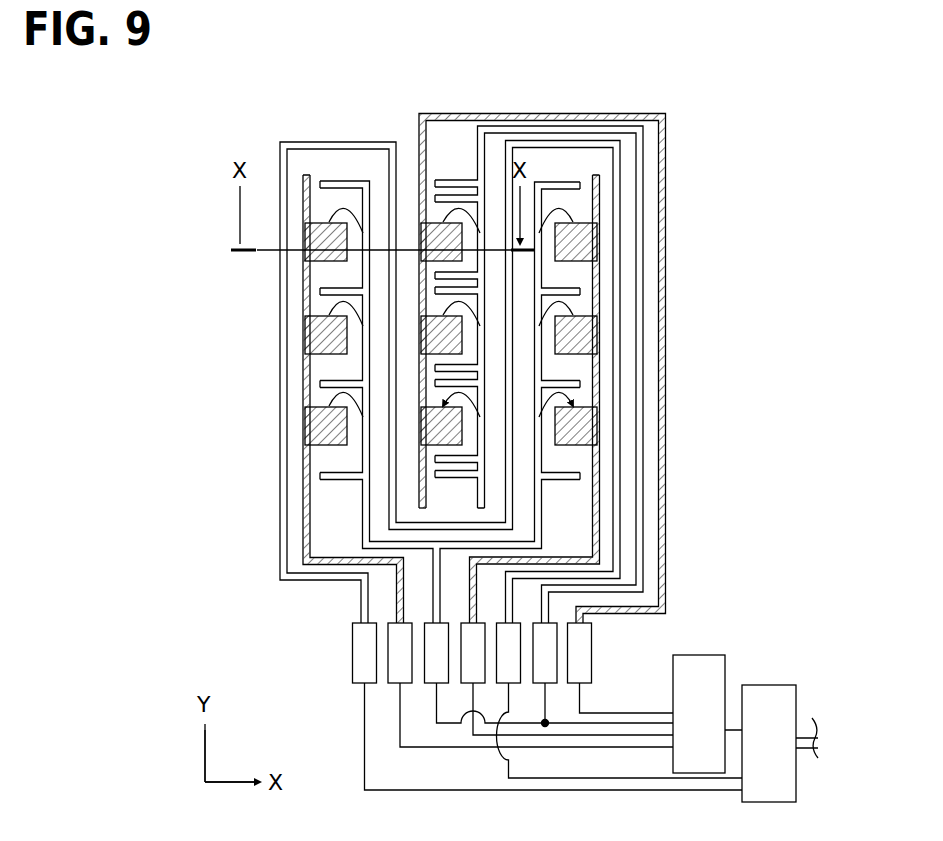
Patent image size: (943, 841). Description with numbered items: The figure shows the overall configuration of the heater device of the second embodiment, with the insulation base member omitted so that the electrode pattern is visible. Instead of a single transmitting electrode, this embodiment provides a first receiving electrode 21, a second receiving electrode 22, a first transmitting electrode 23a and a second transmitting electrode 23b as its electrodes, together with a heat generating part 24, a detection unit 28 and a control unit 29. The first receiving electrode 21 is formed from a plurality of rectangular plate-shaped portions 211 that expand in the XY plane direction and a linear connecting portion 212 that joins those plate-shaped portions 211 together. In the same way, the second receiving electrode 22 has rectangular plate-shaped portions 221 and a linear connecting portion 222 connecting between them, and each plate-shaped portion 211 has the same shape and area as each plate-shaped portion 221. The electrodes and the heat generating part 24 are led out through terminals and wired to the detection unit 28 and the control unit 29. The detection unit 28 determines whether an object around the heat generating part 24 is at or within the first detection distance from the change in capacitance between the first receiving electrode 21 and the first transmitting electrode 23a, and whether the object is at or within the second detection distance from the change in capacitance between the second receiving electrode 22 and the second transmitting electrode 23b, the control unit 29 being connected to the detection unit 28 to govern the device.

The first receiving electrode 21 is at (399, 340).
The plate-shaped portion 211 is at (434, 222).
The connecting portion 212 is at (418, 287).
The second receiving electrode 22 is at (465, 399).
The plate-shaped portion 221 is at (329, 318).
The connecting portion 222 is at (310, 366).
The first transmitting electrode 23a is at (483, 453).
The second transmitting electrode 23b is at (363, 493).
The heat generating part 24 is at (280, 384).
The detection unit 28 is at (703, 655).
The control unit 29 is at (767, 685).